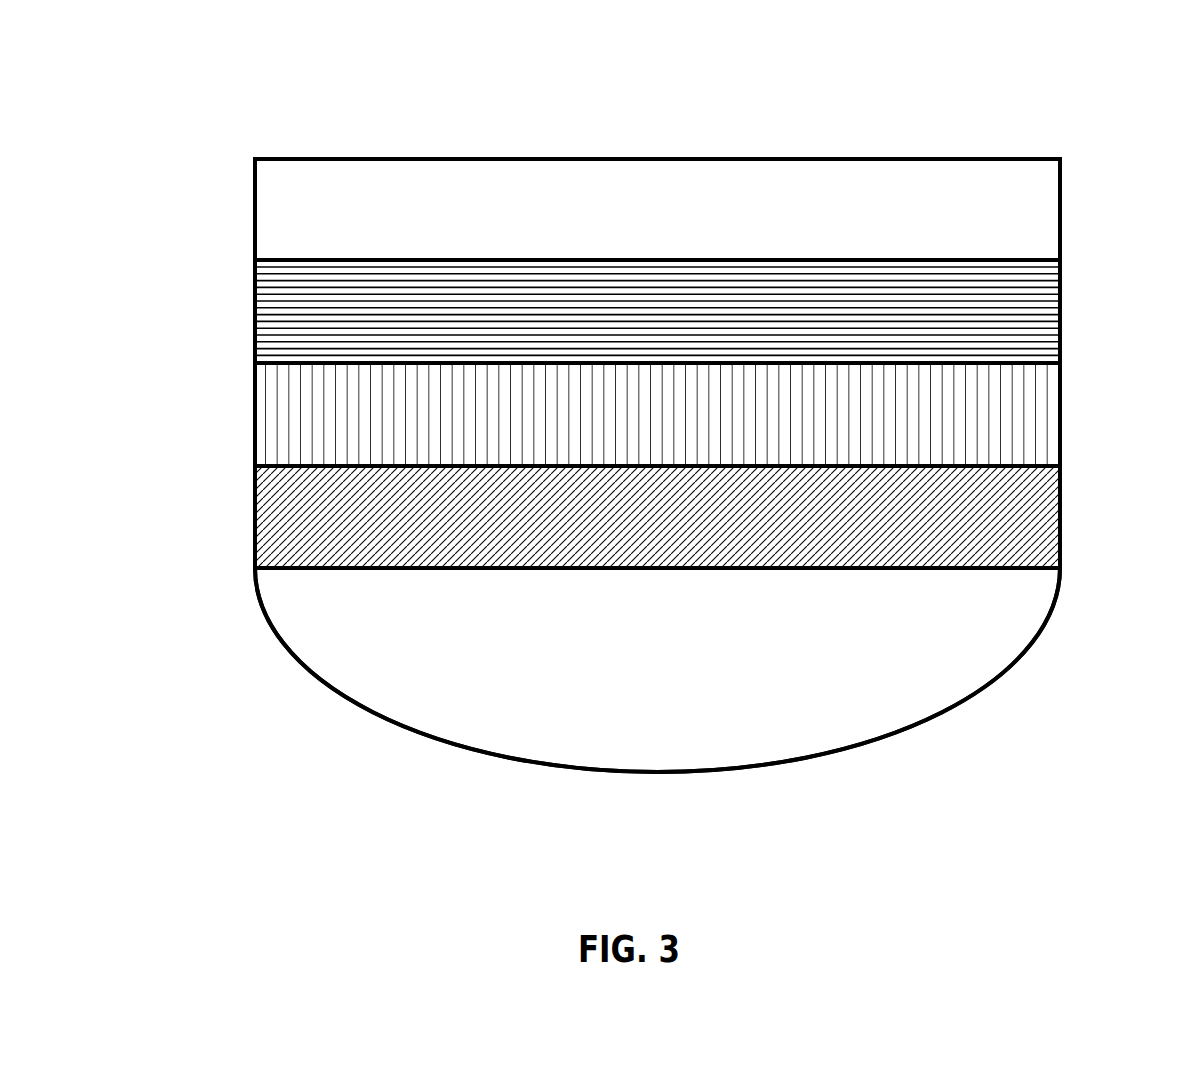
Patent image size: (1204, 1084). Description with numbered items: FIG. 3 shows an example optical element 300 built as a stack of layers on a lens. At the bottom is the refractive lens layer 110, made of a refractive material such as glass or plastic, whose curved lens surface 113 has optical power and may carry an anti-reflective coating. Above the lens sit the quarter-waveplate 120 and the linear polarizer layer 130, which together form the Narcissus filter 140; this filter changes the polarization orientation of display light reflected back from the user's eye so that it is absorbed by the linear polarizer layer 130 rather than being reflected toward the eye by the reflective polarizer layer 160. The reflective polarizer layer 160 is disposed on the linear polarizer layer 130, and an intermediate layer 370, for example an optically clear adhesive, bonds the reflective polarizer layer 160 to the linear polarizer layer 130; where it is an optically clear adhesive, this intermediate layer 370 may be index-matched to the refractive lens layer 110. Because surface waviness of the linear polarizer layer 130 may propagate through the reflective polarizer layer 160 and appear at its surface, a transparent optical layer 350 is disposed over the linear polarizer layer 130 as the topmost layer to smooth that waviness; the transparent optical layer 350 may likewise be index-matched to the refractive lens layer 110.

The optical element 300 is at (1188, 66).
The transparent optical layer 350 is at (240, 161).
The reflective polarizer layer 160 is at (240, 360).
The intermediate layer 370 is at (1068, 358).
The Narcissus filter 140 is at (650, 465).
The linear polarizer layer 130 is at (240, 463).
The quarter-waveplate 120 is at (604, 517).
The refractive lens layer 110 is at (692, 688).
The lens surface 113 is at (925, 724).